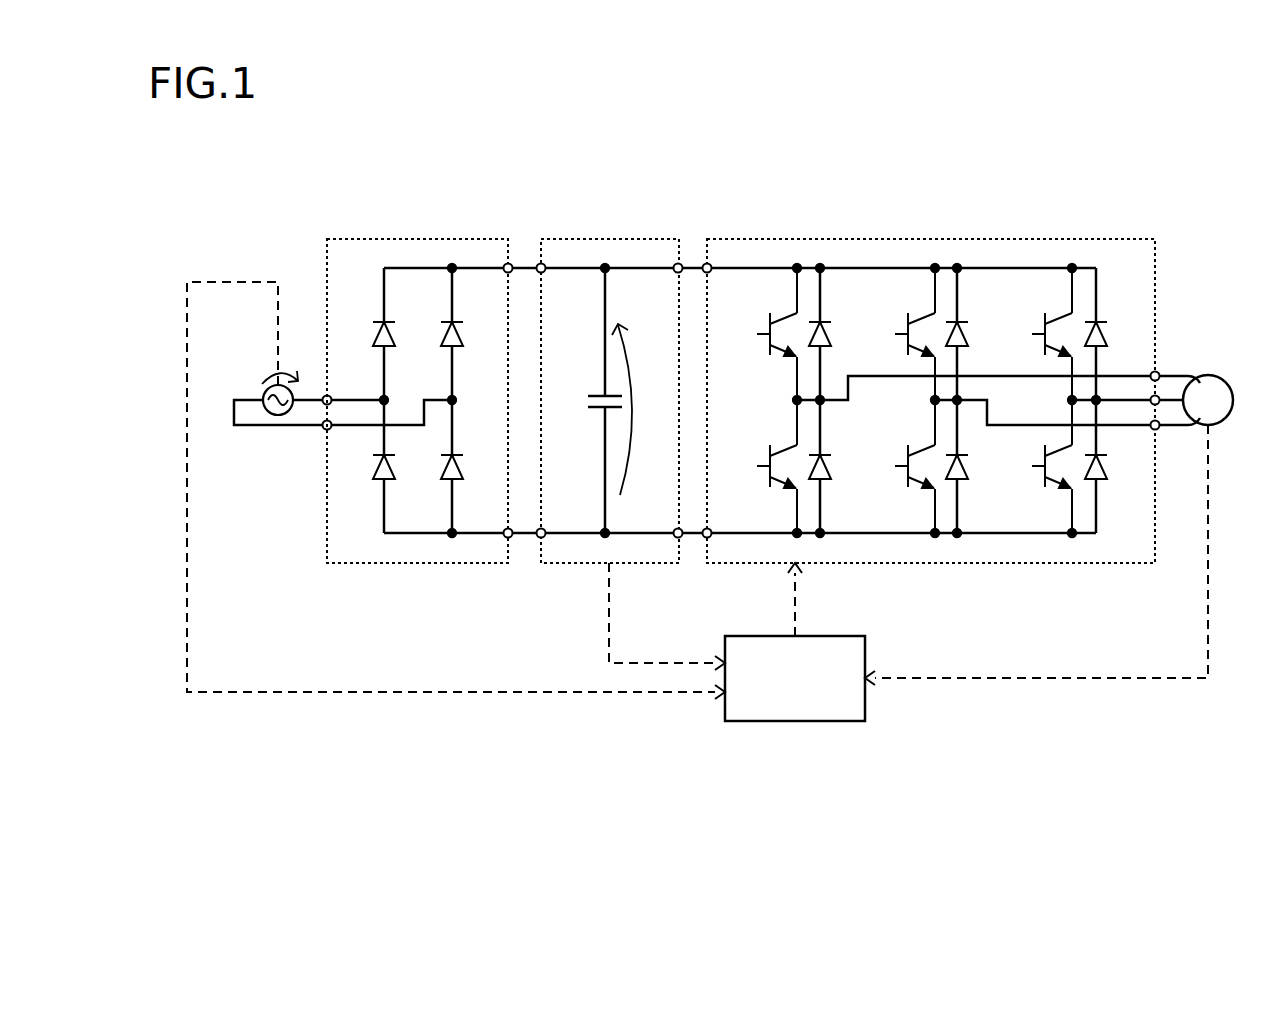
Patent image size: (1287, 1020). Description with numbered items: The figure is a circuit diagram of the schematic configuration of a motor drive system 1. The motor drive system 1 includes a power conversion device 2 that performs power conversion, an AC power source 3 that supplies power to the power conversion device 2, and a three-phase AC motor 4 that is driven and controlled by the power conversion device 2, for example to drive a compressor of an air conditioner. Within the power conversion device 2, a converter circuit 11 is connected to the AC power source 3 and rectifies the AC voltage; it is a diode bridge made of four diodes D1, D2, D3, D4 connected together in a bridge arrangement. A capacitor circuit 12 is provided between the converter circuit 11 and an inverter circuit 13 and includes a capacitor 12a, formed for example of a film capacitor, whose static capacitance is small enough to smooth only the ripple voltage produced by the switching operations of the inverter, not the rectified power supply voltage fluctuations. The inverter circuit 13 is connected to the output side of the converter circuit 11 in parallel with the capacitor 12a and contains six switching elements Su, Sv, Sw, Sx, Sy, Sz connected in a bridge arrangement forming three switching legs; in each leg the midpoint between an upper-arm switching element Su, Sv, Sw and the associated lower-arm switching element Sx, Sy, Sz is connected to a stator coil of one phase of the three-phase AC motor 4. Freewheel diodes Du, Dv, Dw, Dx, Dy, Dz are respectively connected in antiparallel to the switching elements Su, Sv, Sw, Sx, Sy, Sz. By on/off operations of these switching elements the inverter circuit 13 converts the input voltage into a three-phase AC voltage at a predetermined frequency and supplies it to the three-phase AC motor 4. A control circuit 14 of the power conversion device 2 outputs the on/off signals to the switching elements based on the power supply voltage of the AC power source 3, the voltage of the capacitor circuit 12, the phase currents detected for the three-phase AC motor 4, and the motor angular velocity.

The motor drive system 1 is at (1169, 128).
The power conversion device 2 is at (1099, 212).
The AC power source 3 is at (264, 392).
The three-phase AC motor 4 is at (1206, 376).
The converter circuit 11 is at (425, 239).
The capacitor circuit 12 is at (625, 239).
The capacitor 12a is at (590, 408).
The inverter circuit 13 is at (963, 239).
The control circuit 14 is at (830, 636).
The diode D1 is at (412, 311).
The diode D2 is at (462, 322).
The diode D3 is at (394, 481).
The diode D4 is at (462, 481).
The switching element Su is at (757, 336).
The switching element Sv is at (895, 336).
The switching element Sw is at (1032, 336).
The switching element Sx is at (758, 467).
The switching element Sy is at (895, 467).
The switching element Sz is at (1032, 467).
The freewheel diode Du is at (829, 322).
The freewheel diode Dv is at (966, 322).
The freewheel diode Dw is at (1103, 322).
The freewheel diode Dx is at (824, 481).
The freewheel diode Dy is at (962, 481).
The freewheel diode Dz is at (1100, 481).